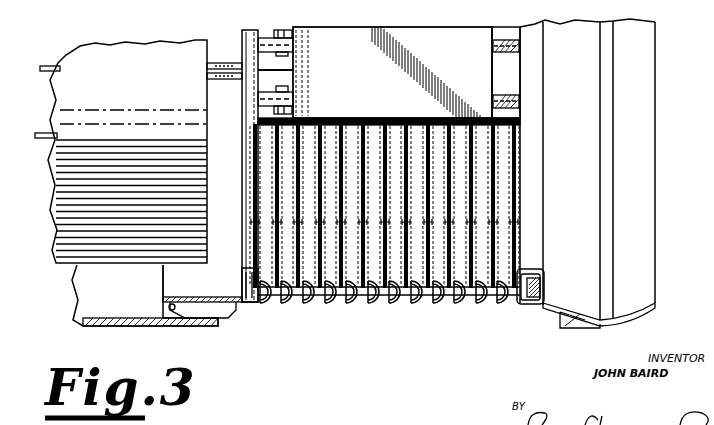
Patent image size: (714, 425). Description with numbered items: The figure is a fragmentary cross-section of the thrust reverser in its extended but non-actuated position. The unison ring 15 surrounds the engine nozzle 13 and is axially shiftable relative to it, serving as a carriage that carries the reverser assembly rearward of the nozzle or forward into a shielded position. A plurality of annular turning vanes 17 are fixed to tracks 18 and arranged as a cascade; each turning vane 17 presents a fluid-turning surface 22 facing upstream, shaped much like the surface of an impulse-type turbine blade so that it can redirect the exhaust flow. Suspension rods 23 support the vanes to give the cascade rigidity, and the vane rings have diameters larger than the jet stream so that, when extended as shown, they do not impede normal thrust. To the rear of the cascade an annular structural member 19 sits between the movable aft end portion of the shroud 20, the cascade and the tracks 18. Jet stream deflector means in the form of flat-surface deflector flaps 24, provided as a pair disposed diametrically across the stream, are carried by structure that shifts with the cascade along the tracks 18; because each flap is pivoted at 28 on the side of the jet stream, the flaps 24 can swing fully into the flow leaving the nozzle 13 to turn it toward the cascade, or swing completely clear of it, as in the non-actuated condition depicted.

The nozzle 13 is at (138, 103).
The unison ring 15 is at (247, 33).
The turning vane 17 is at (500, 305).
The track 18 is at (514, 83).
The annular structural member 19 is at (537, 270).
The shroud 20 is at (637, 215).
The fluid-turning surface 22 is at (460, 302).
The suspension rod 23 is at (278, 302).
The deflector flap 24 is at (358, 88).
The pivot 28 is at (290, 82).